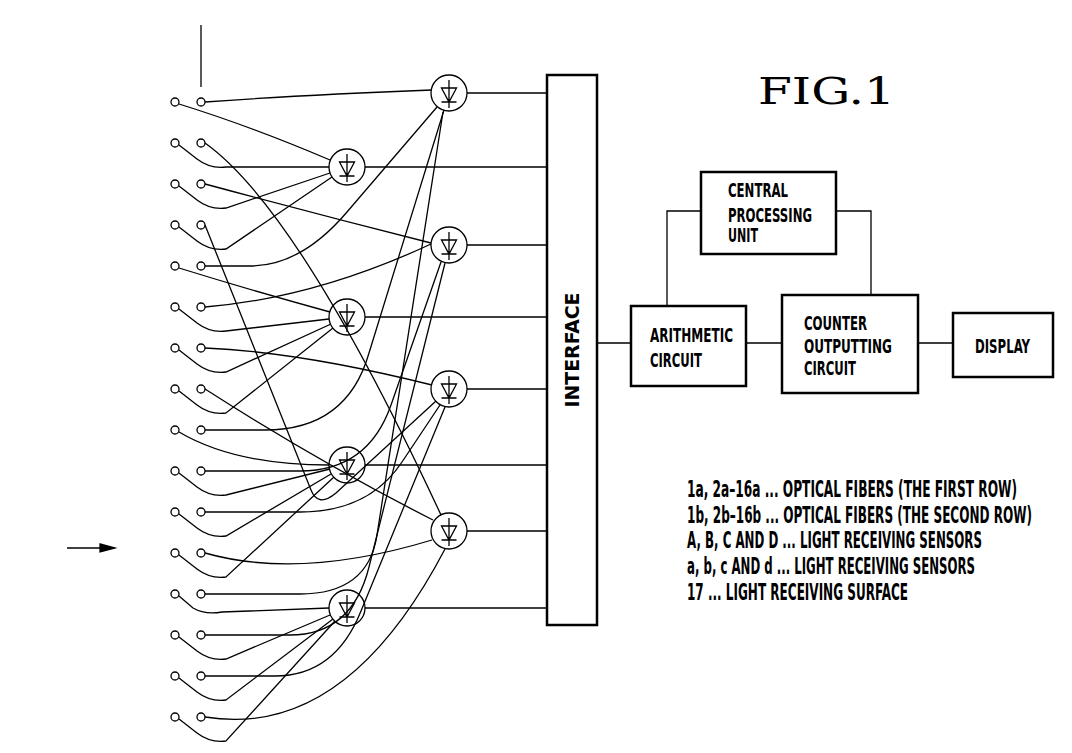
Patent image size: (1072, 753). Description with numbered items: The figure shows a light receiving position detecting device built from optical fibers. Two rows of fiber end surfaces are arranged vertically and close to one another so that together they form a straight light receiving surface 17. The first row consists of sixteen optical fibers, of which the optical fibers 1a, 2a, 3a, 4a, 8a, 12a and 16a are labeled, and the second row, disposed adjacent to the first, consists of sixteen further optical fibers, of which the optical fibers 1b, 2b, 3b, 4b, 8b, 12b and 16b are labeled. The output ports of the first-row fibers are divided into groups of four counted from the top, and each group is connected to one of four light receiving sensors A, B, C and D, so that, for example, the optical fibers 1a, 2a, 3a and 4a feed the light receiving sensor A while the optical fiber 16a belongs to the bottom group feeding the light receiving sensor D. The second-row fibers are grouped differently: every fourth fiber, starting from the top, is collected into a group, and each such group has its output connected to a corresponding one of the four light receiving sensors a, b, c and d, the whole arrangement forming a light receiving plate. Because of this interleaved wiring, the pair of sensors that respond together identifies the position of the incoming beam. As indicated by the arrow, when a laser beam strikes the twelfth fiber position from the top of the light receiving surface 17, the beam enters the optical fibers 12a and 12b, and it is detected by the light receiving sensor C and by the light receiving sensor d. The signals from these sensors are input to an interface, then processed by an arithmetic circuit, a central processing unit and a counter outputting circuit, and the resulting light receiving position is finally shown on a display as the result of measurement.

The optical fiber 1a is at (242, 117).
The optical fiber 2a is at (241, 148).
The optical fiber 3a is at (241, 189).
The optical fiber 4a is at (242, 213).
The optical fiber 8a is at (243, 370).
The optical fiber 12a is at (240, 527).
The optical fiber 16a is at (240, 681).
The optical fiber 1b is at (314, 90).
The optical fiber 2b is at (319, 322).
The optical fiber 3b is at (314, 206).
The optical fiber 4b is at (316, 355).
The optical fiber 8b is at (315, 447).
The optical fiber 12b is at (314, 551).
The optical fiber 16b is at (321, 635).
The light receiving sensor A is at (347, 151).
The light receiving sensor B is at (347, 301).
The light receiving sensor C is at (347, 448).
The light receiving sensor D is at (352, 596).
The light receiving sensor a is at (459, 82).
The light receiving sensor b is at (459, 234).
The light receiving sensor c is at (459, 376).
The light receiving sensor d is at (457, 517).
The light receiving surface 17 is at (200, 57).